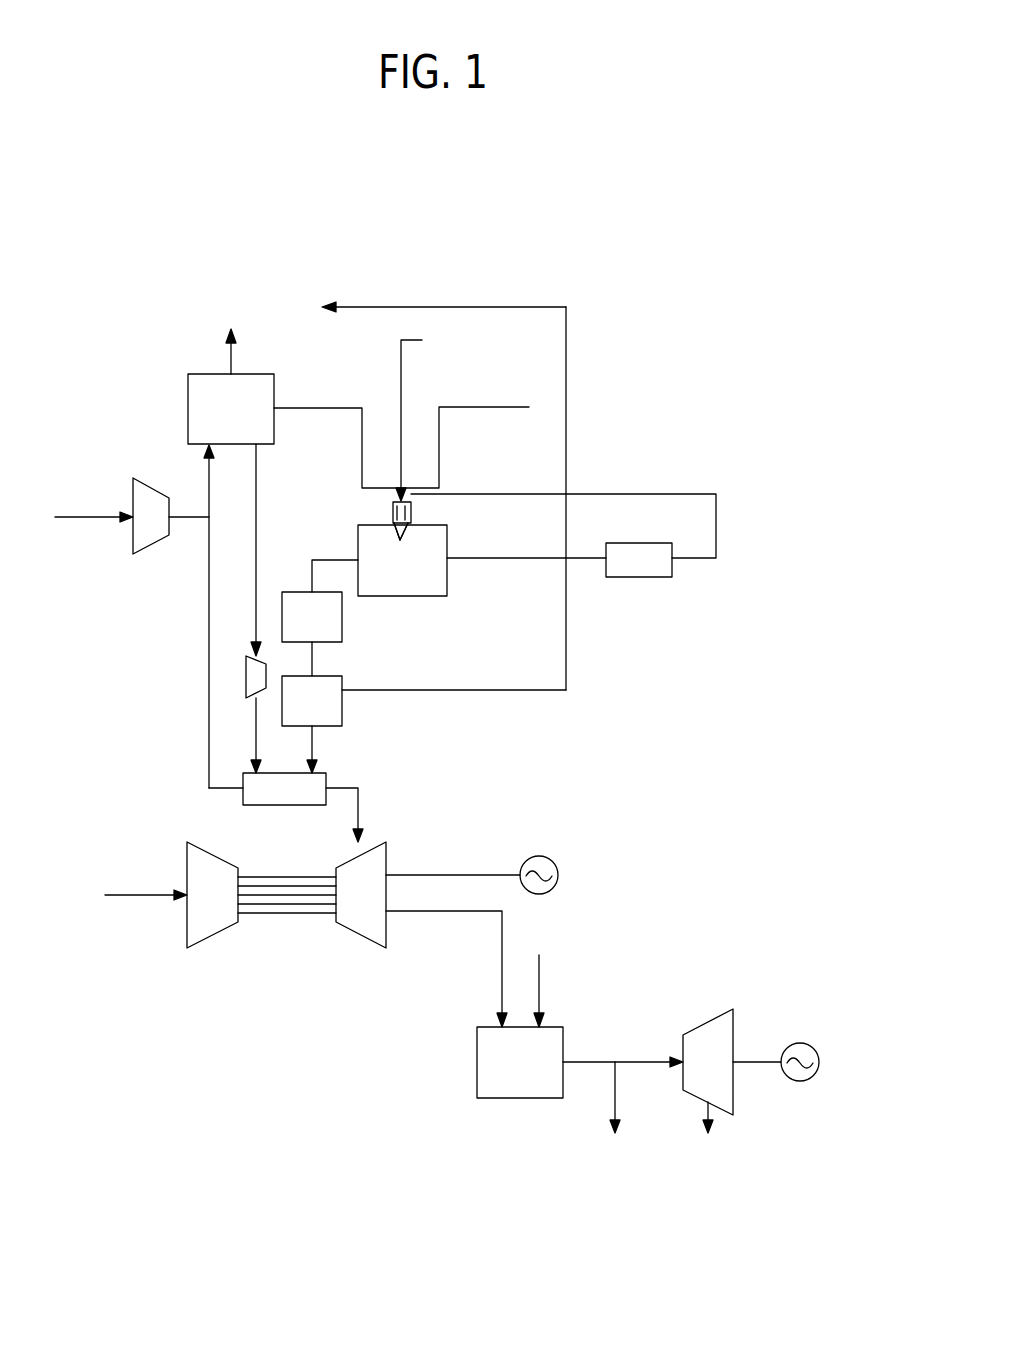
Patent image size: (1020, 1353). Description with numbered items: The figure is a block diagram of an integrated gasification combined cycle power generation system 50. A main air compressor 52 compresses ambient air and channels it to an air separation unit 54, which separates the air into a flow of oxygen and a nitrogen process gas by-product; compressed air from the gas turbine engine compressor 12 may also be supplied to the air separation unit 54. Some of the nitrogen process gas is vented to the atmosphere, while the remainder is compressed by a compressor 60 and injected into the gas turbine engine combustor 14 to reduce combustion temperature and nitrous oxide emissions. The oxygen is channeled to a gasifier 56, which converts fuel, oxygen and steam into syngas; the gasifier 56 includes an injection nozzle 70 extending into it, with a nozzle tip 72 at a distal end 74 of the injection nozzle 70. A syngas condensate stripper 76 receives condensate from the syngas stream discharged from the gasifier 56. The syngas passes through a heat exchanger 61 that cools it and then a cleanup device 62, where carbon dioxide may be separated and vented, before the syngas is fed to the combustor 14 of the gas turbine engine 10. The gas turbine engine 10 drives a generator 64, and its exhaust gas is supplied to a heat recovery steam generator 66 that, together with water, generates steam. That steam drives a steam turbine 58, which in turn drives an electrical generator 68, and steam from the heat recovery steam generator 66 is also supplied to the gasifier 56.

The integrated gasification combined cycle power generation system 50 is at (146, 225).
The gas turbine engine 10 is at (178, 815).
The gas turbine engine compressor 12 is at (216, 926).
The gas turbine engine combustor 14 is at (289, 805).
The main air compressor 52 is at (160, 538).
The air separation unit 54 is at (188, 402).
The gasifier 56 is at (447, 545).
The steam turbine 58 is at (708, 1022).
The compressor 60 is at (246, 663).
The heat exchanger 61 is at (342, 644).
The cleanup device 62 is at (328, 728).
The generator 64 is at (556, 861).
The heat recovery steam generator 66 is at (490, 1098).
The electrical generator 68 is at (816, 1045).
The injection nozzle 70 is at (411, 511).
The nozzle tip 72 is at (398, 545).
The distal end 74 is at (396, 534).
The syngas condensate stripper 76 is at (640, 578).